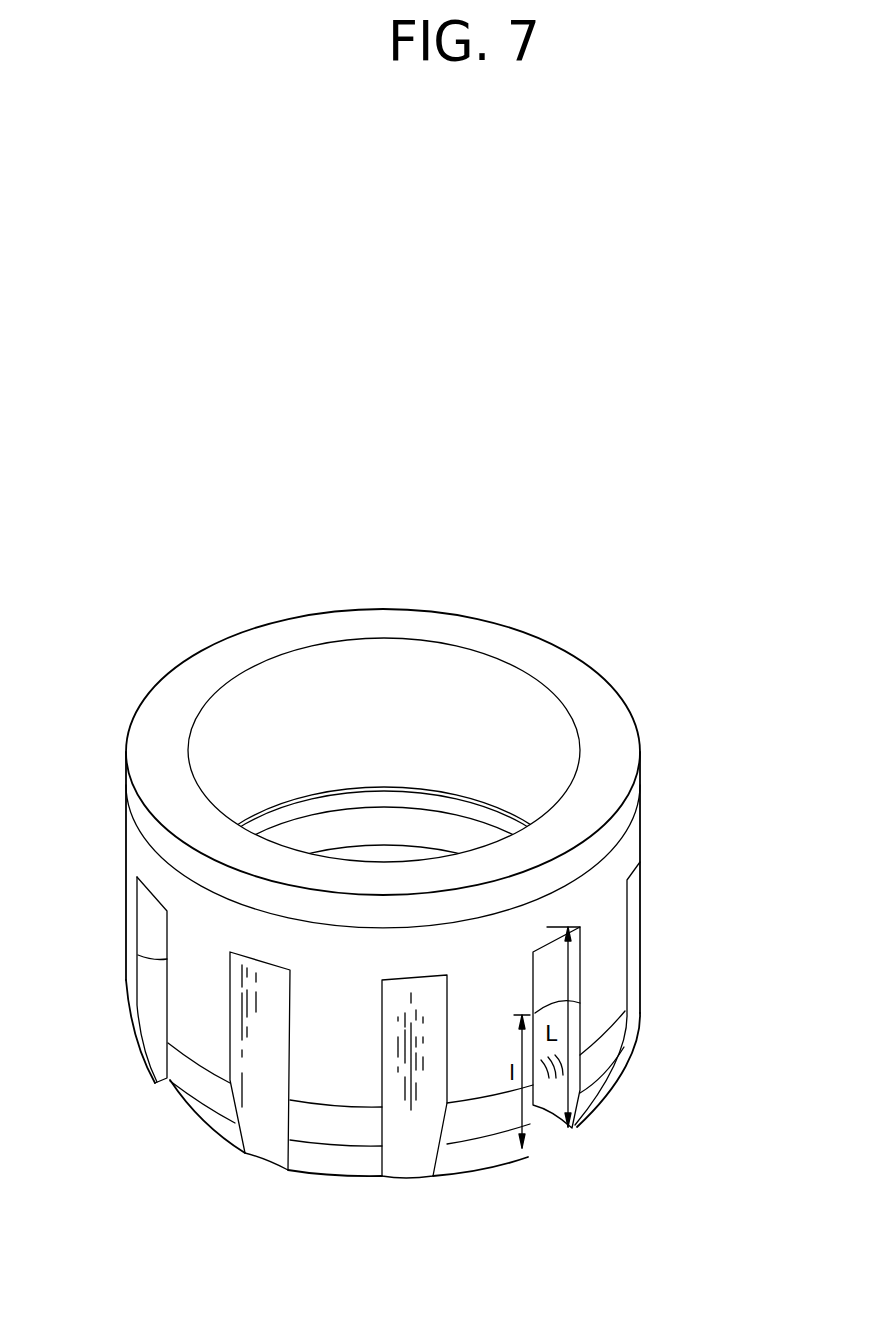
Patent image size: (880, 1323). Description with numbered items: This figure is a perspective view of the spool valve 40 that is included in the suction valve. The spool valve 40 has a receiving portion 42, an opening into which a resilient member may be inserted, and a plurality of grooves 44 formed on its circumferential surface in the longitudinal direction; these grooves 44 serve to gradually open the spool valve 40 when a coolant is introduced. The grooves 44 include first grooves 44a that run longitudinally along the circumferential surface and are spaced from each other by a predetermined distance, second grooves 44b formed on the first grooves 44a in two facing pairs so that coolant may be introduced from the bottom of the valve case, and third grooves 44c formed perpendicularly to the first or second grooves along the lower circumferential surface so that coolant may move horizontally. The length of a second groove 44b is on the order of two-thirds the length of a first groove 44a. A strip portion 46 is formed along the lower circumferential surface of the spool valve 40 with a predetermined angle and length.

The spool valve 40 is at (685, 740).
The receiving portion 42 is at (537, 725).
The plurality of grooves 44 is at (399, 1067).
The first grooves 44a is at (143, 928).
The second grooves 44b is at (148, 1033).
The third grooves 44c is at (633, 1065).
The strip portion 46 is at (185, 1114).